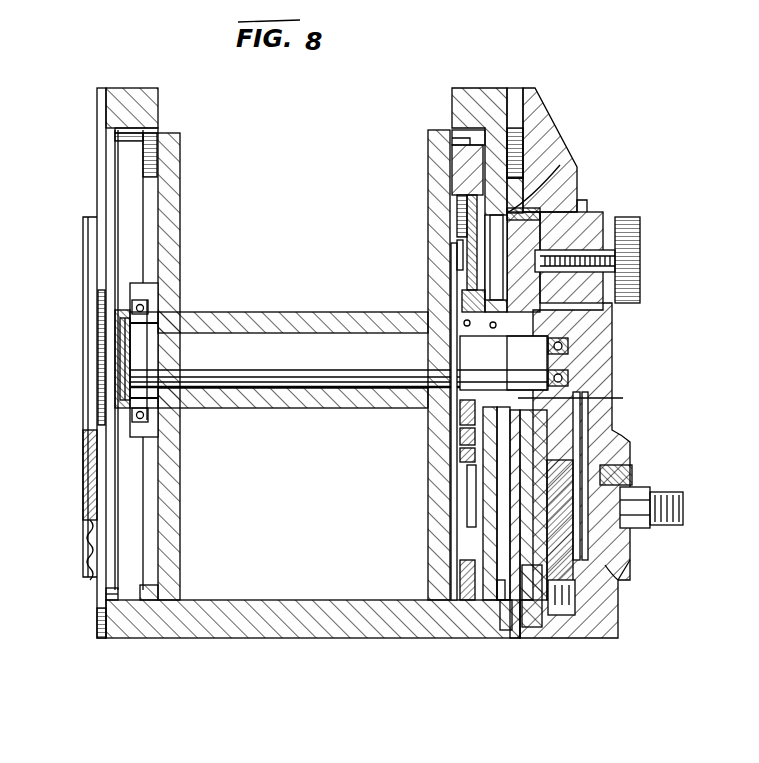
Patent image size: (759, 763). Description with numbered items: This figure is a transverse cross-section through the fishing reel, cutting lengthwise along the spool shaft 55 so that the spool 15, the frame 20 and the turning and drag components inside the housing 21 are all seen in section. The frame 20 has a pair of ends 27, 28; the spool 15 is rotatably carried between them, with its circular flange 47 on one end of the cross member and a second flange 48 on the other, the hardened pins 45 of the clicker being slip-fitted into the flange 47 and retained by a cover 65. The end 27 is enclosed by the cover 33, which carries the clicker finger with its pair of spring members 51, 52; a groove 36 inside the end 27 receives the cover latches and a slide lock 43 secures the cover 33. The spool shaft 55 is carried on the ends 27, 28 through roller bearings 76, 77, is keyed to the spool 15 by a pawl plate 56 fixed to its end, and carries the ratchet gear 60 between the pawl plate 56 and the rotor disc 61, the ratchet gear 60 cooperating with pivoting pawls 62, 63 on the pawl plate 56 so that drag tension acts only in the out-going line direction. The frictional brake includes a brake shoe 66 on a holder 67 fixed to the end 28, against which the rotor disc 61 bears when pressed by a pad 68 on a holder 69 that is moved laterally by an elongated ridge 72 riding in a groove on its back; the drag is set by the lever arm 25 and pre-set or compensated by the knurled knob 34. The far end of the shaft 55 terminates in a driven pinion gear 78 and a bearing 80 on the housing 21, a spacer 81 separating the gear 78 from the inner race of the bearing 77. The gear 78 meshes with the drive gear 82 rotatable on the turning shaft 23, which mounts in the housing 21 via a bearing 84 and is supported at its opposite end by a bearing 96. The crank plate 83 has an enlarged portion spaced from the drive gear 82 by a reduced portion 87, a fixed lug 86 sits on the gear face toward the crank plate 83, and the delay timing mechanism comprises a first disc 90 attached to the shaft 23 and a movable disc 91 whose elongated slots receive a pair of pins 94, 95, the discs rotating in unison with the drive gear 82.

The spool 15 is at (186, 140).
The frame 20 is at (490, 86).
The housing 21 is at (548, 110).
The turning shaft 23 is at (640, 492).
The lever arm 25 is at (602, 222).
The end 27 is at (133, 88).
The end 28 is at (455, 88).
The cover 33 is at (97, 90).
The knurled knob 34 is at (641, 262).
The groove 36 is at (110, 603).
The slide lock 43 is at (90, 565).
The hardened pins 45 is at (140, 345).
The circular flange 47 is at (181, 210).
The second flange 48 is at (432, 217).
The spring member 51 is at (138, 306).
The spring member 52 is at (138, 418).
The spool shaft 55 is at (320, 368).
The pawl plate 56 is at (455, 292).
The ratchet gear 60 is at (462, 418).
The rotor disc 61 is at (470, 518).
The pivoting pawl 62 is at (466, 262).
The pivoting pawl 63 is at (455, 468).
The cover 65 is at (122, 330).
The brake shoe 66 is at (455, 200).
The holder 67 is at (462, 160).
The pad 68 is at (470, 237).
The holder 69 is at (548, 165).
The elongated ridge 72 is at (560, 192).
The roller bearing 76 is at (112, 367).
The roller bearing 77 is at (455, 340).
The driven pinion gear 78 is at (586, 325).
The bearing 80 is at (575, 372).
The spacer 81 is at (589, 403).
The drive gear 82 is at (532, 627).
The crank plate 83 is at (606, 620).
The bearing 84 is at (605, 568).
The fixed lug 86 is at (570, 602).
The reduced portion 87 is at (560, 615).
The first disc 90 is at (505, 622).
The movable disc 91 is at (497, 600).
The pin 94 is at (500, 440).
The pin 95 is at (495, 573).
The bearing 96 is at (492, 540).